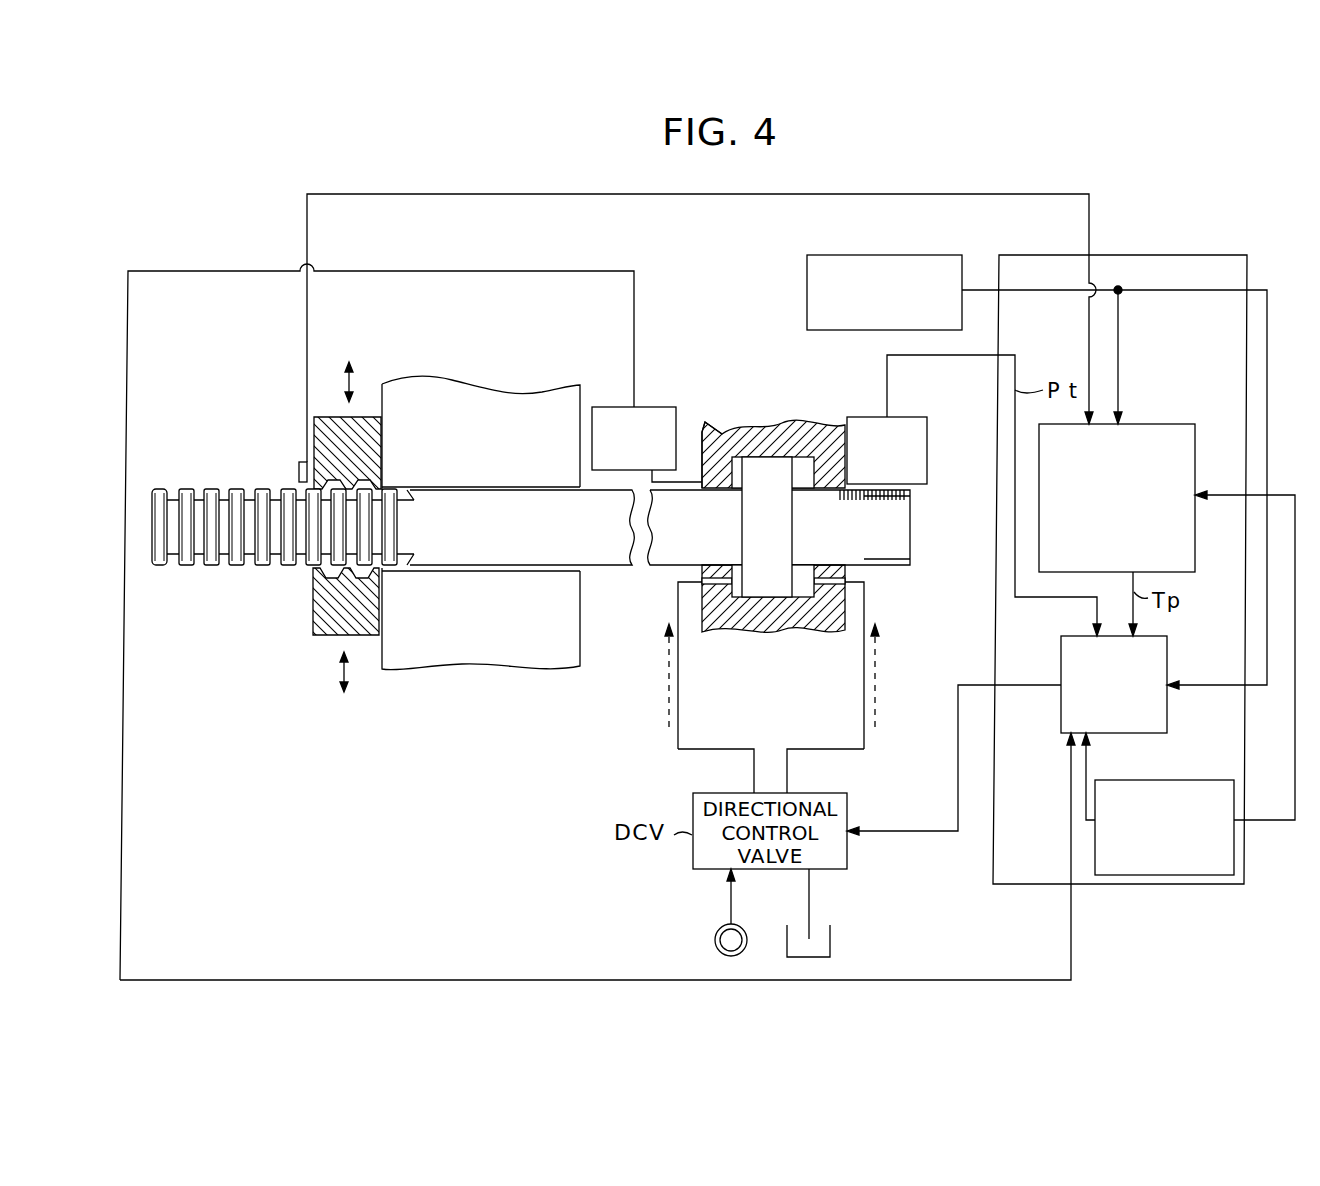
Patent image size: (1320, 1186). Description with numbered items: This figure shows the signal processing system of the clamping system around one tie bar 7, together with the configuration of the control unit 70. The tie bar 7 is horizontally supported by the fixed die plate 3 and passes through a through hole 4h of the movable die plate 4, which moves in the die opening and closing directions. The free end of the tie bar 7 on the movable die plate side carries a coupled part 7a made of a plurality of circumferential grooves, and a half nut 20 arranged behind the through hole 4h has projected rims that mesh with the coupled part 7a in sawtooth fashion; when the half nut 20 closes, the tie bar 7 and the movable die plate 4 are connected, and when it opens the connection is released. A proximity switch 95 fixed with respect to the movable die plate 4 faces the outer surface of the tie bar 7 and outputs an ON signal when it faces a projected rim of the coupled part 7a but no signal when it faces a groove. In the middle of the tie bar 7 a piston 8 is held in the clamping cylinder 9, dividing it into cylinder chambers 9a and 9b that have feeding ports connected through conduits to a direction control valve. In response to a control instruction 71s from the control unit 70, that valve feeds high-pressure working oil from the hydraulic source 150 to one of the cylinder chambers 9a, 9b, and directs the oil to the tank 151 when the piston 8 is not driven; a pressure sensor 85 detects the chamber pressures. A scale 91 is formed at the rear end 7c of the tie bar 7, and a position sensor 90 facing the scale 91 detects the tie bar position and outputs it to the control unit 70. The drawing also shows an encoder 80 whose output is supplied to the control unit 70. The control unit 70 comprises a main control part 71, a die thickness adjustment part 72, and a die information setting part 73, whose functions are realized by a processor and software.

The fixed die plate 3 is at (706, 445).
The movable die plate 4 is at (512, 558).
The through hole 4h is at (522, 553).
The tie bar 7 is at (566, 454).
The coupled part 7a is at (203, 487).
The rear end of the tie bar 7c is at (895, 545).
The piston 8 is at (768, 585).
The clamping cylinder 9 is at (771, 501).
The cylinder chamber 9a is at (738, 455).
The cylinder chamber 9b is at (805, 455).
The half nut 20 is at (282, 617).
The control unit 70 is at (1120, 883).
The main control part 71 is at (1140, 733).
The control instruction 71s is at (956, 830).
The die thickness adjustment part 72 is at (1168, 422).
The die information setting part 73 is at (1205, 777).
The encoder 80 is at (863, 253).
The pressure sensor 85 is at (645, 405).
The position sensor 90 is at (925, 447).
The scale 91 is at (885, 500).
The proximity switch 95 is at (297, 468).
The hydraulic source 150 is at (711, 940).
The tank 151 is at (828, 938).